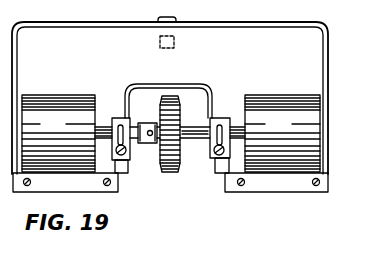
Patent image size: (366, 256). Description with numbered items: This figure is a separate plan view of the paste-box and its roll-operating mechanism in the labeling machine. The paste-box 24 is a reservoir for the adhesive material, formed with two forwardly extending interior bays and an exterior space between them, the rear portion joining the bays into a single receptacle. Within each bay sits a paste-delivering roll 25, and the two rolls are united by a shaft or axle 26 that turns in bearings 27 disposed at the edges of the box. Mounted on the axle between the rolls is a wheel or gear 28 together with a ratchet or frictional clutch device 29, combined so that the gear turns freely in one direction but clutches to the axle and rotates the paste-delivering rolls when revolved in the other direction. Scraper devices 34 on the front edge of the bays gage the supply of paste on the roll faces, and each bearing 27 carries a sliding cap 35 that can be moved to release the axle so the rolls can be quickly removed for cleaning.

The paste-box 24 is at (170, 95).
The paste-delivering roll 25 is at (171, 133).
The shaft or axle 26 is at (197, 131).
The bearings 27 is at (118, 118).
The wheel or gear 28 is at (171, 173).
The ratchet or frictional clutch device 29 is at (155, 146).
The scraper devices 34 is at (56, 200).
The sliding cap 35 is at (116, 163).